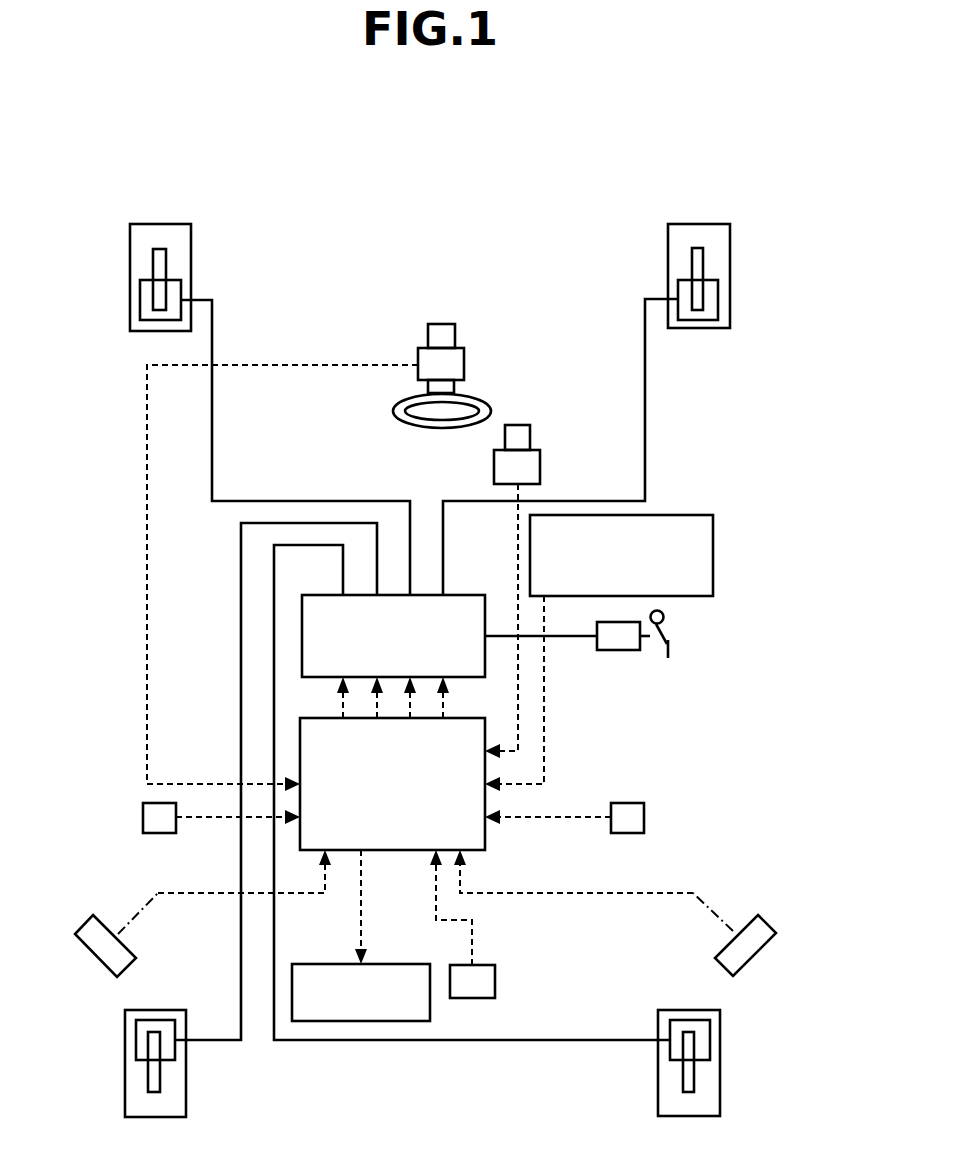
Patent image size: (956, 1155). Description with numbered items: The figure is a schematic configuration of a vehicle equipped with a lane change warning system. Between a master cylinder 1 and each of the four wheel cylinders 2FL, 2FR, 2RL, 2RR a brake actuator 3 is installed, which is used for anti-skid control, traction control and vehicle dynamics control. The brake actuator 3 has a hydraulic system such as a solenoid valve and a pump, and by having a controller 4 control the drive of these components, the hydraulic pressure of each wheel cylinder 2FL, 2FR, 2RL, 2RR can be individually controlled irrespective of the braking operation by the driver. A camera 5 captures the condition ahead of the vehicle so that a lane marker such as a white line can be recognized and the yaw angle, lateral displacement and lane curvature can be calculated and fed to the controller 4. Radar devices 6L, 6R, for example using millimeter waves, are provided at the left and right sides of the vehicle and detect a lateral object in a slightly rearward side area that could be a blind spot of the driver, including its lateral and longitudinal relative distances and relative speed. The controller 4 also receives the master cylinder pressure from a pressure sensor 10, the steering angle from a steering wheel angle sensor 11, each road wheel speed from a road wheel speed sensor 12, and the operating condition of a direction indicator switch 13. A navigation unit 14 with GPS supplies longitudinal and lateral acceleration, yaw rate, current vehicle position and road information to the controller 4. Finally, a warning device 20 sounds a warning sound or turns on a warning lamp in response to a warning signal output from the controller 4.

The master cylinder 1 is at (617, 651).
The front-left wheel cylinder 2FL is at (196, 276).
The front-right wheel cylinder 2FR is at (733, 276).
The rear-left wheel cylinder 2RL is at (189, 1053).
The rear-right wheel cylinder 2RR is at (722, 1053).
The brake actuator 3 is at (457, 593).
The controller 4 is at (460, 716).
The camera 5 is at (542, 462).
The left radar device 6L is at (92, 955).
The right radar device 6R is at (760, 952).
The pressure sensor 10 is at (645, 818).
The steering wheel angle sensor 11 is at (466, 362).
The road wheel speed sensor 12 is at (497, 978).
The direction indicator switch 13 is at (141, 816).
The navigation unit 14 is at (715, 555).
The warning device 20 is at (410, 945).